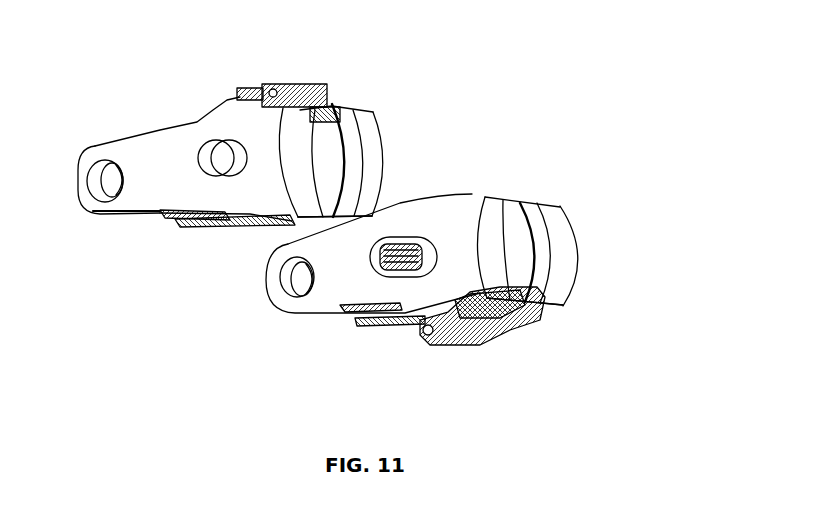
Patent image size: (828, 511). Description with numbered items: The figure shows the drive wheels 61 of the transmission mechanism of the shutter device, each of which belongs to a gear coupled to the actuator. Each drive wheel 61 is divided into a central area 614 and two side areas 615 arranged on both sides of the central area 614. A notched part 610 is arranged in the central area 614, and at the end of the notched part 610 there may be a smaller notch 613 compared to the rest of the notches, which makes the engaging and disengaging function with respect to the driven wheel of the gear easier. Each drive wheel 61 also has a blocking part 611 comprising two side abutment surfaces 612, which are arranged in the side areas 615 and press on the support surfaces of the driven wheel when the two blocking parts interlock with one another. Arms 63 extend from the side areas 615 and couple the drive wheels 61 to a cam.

The drive wheel 61 is at (364, 215).
The arm 63 is at (155, 157).
The notched part 610 is at (282, 90).
The blocking part 611 is at (383, 135).
The abutment surface 612 is at (298, 177).
The smaller notch 613 is at (330, 108).
The central area 614 is at (317, 201).
The side area 615 is at (340, 223).